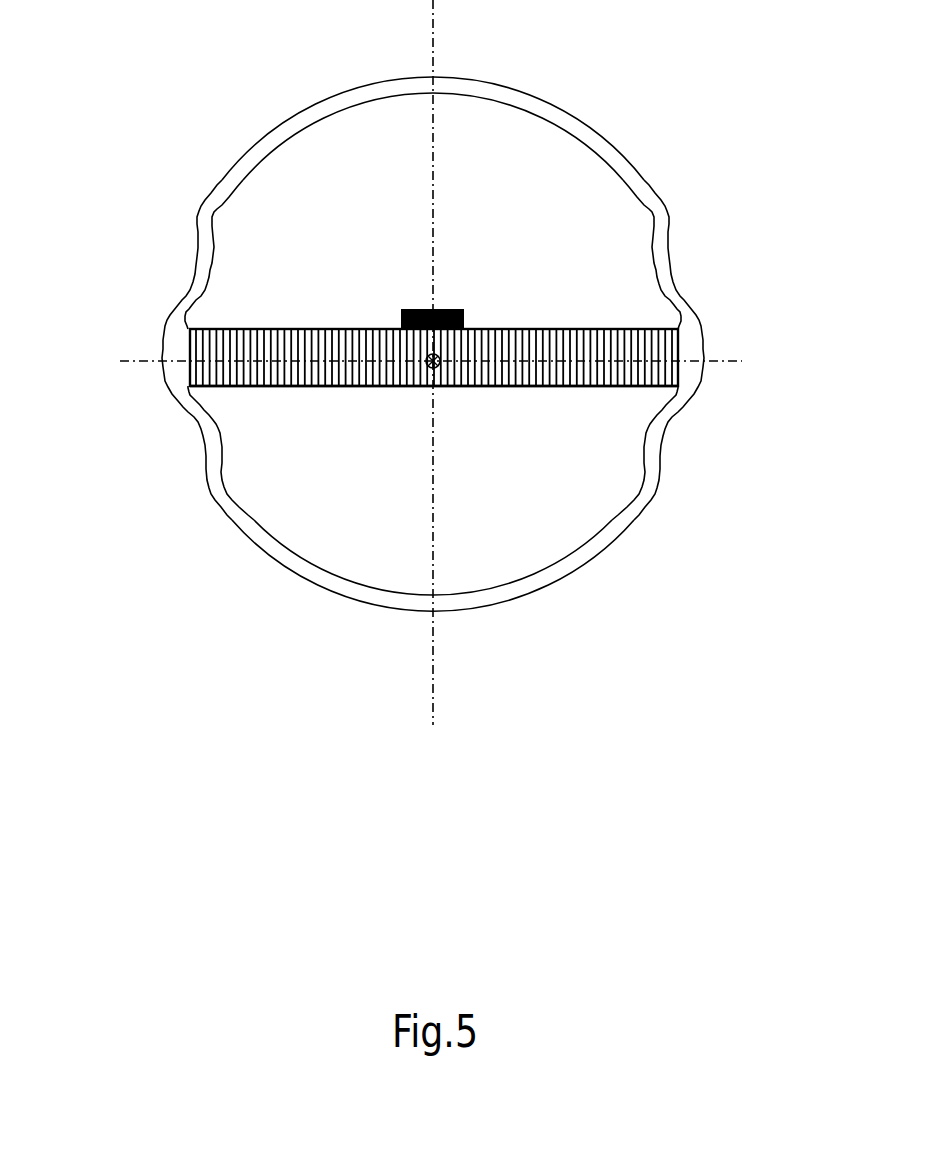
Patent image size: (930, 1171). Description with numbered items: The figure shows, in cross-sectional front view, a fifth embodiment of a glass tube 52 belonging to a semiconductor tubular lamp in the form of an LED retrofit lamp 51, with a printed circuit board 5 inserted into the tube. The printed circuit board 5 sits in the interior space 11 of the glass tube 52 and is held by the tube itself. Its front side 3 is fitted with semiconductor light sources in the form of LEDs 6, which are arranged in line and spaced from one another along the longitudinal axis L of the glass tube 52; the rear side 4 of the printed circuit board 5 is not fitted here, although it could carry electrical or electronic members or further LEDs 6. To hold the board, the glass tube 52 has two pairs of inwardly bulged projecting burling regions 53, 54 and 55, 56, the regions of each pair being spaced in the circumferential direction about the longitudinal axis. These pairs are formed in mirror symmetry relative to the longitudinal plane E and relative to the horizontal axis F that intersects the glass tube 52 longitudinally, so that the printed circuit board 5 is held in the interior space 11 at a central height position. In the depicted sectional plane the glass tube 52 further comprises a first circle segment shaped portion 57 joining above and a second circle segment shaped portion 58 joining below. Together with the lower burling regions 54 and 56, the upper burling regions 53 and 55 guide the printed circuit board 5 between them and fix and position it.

The LED retrofit lamp 51 is at (170, 126).
The glass tube 52 is at (279, 128).
The first circle segment shaped portion 57 is at (580, 130).
The interior space 11 is at (610, 212).
The upper burling region 53 is at (196, 289).
The upper burling region 55 is at (673, 296).
The lower burling region 54 is at (203, 422).
The lower burling region 56 is at (668, 437).
The second circle segment shaped portion 58 is at (400, 605).
The front side 3 is at (275, 329).
The rear side 4 is at (351, 386).
The printed circuit board 5 is at (535, 386).
The LED 6 is at (445, 310).
The longitudinal axis L is at (428, 367).
The longitudinal plane E is at (452, 0).
The horizontal axis F is at (130, 360).